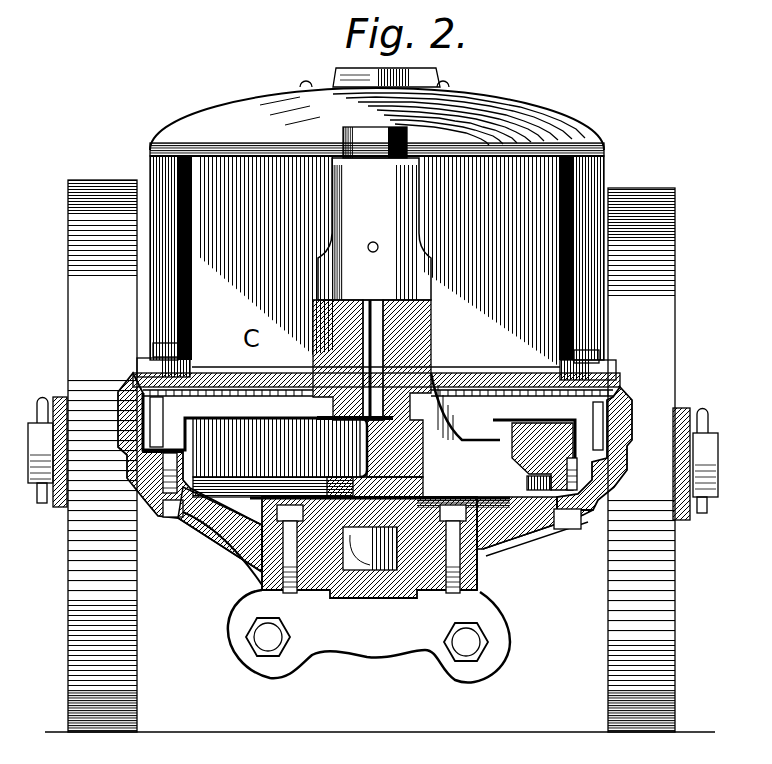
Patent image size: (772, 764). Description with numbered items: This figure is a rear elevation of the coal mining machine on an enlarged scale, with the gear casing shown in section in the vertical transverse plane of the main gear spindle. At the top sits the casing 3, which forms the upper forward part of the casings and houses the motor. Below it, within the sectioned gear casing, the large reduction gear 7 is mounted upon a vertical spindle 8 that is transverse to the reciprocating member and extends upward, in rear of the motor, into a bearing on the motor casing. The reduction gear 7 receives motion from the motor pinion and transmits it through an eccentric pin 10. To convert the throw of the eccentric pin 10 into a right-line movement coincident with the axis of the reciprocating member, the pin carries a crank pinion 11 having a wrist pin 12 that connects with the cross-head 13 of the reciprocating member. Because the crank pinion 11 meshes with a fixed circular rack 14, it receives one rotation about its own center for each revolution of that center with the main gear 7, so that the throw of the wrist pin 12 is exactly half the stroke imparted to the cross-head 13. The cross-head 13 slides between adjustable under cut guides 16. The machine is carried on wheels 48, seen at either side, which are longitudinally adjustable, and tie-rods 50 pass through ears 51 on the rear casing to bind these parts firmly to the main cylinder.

The casing 3 is at (377, 112).
The reduction gear 7 is at (130, 433).
The spindle 8 is at (393, 355).
The eccentric pin 10 is at (509, 525).
The crank pinion 11 is at (551, 525).
The wrist pin 12 is at (390, 570).
The cross-head 13 is at (298, 565).
The fixed circular rack 14 is at (273, 459).
The adjustable under cut guides 16 is at (260, 552).
The wheels 48 is at (669, 380).
The tie-rods 50 is at (270, 639).
The ears 51 is at (247, 612).